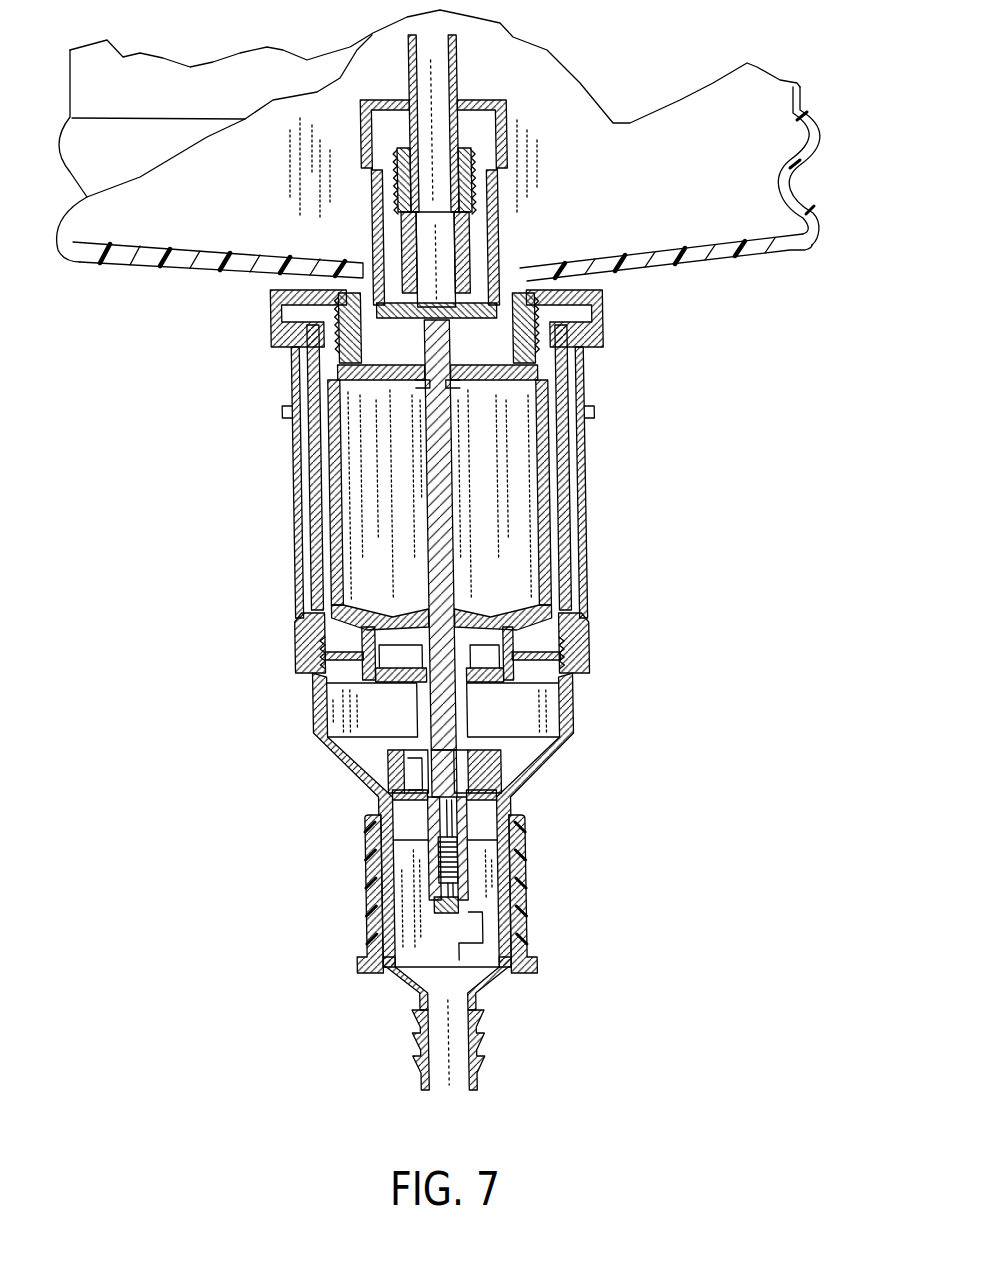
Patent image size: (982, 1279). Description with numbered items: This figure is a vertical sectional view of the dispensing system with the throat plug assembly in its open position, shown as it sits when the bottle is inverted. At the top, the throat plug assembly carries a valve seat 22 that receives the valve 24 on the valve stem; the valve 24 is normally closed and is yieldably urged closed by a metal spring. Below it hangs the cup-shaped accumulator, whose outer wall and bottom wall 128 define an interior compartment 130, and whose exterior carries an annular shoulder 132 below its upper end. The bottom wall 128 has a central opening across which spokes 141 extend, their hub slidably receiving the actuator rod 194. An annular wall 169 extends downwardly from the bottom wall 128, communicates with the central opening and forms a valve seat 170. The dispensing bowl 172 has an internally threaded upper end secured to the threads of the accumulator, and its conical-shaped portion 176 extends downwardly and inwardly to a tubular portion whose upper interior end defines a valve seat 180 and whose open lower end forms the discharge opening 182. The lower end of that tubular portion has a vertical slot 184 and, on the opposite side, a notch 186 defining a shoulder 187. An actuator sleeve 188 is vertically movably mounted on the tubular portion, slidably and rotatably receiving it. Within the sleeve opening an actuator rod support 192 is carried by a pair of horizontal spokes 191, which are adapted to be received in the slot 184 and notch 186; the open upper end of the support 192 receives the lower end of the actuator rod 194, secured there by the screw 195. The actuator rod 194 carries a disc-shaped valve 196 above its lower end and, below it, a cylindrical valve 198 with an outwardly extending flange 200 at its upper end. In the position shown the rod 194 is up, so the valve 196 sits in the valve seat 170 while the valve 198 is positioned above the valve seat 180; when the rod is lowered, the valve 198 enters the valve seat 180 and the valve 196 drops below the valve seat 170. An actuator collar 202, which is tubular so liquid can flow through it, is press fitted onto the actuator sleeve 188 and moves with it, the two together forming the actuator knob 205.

The valve seat 22 is at (512, 383).
The valve 24 is at (507, 258).
The bottom wall 128 is at (362, 636).
The interior compartment 130 is at (503, 500).
The annular shoulder 132 is at (596, 411).
The spokes 141 is at (398, 607).
The annular wall 169 is at (398, 673).
The valve seat 170 is at (398, 702).
The dispensing bowl 172 is at (295, 727).
The conical-shaped portion 176 is at (327, 750).
The valve seat 180 is at (513, 783).
The discharge opening 182 is at (428, 957).
The slot 184 is at (452, 924).
The notch 186 is at (480, 990).
The shoulder 187 is at (468, 940).
The actuator sleeve 188 is at (515, 855).
The spokes 191 is at (427, 903).
The actuator rod support 192 is at (493, 783).
The actuator rod 194 is at (445, 700).
The screw 195 is at (460, 877).
The disc-shaped valve 196 is at (507, 643).
The cylindrical valve 198 is at (450, 775).
The flange 200 is at (475, 737).
The actuator collar 202 is at (367, 940).
The actuator knob 205 is at (338, 862).